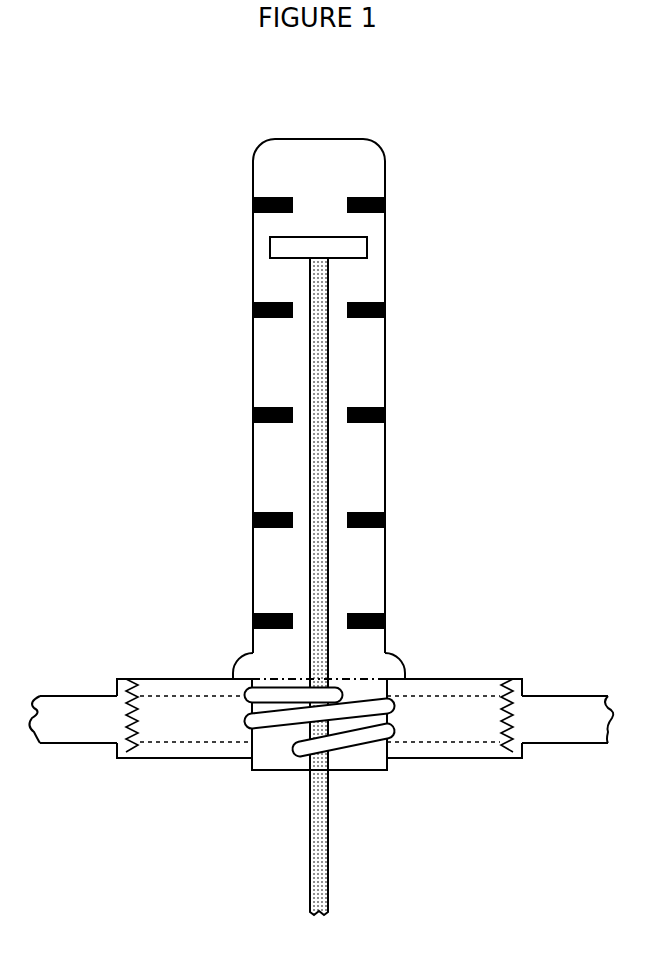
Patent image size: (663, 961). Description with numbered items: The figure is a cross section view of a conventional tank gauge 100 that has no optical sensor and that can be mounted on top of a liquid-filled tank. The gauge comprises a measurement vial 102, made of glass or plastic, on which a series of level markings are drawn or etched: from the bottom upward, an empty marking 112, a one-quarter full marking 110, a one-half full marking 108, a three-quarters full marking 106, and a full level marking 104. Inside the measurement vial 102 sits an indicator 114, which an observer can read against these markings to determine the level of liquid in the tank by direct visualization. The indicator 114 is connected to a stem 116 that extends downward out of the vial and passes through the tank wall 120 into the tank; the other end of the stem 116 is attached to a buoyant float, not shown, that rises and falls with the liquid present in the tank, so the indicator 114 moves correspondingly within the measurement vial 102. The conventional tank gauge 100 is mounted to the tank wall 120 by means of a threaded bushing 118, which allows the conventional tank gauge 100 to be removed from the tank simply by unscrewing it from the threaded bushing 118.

The conventional tank gauge 100 is at (519, 413).
The measurement vial 102 is at (318, 139).
The full level marking 104 is at (385, 200).
The ¾ full marking 106 is at (385, 305).
The ½ full marking 108 is at (385, 410).
The ¼ full marking 110 is at (385, 515).
The empty marking 112 is at (385, 616).
The indicator 114 is at (367, 243).
The stem 116 is at (328, 852).
The threaded bushing 118 is at (153, 679).
The tank wall 120 is at (82, 696).